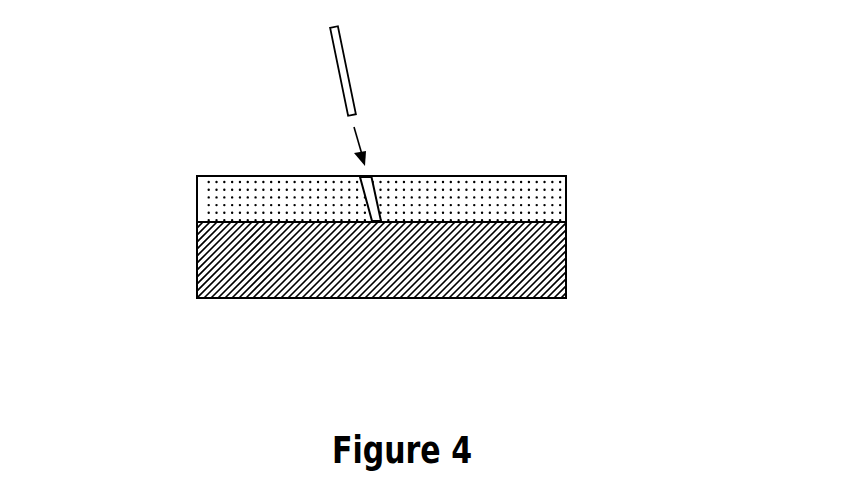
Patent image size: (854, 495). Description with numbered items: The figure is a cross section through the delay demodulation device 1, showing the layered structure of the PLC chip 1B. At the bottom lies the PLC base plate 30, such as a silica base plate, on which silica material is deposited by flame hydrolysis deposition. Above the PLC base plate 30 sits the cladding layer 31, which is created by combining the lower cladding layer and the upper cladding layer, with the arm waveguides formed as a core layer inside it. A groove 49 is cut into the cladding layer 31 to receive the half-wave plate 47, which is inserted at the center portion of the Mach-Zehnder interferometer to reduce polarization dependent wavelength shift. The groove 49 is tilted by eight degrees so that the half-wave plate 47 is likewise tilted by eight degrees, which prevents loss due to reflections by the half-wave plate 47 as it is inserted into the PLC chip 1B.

The delay demodulation device 1 is at (238, 149).
The PLC chip 1B is at (186, 222).
The PLC base plate 30 is at (477, 298).
The cladding layer 31 is at (566, 203).
The half-wave plate 47 is at (345, 80).
The groove 49 is at (377, 192).